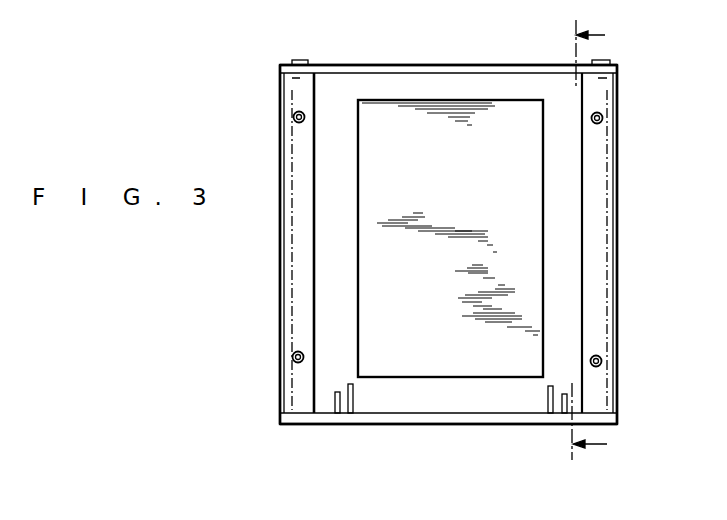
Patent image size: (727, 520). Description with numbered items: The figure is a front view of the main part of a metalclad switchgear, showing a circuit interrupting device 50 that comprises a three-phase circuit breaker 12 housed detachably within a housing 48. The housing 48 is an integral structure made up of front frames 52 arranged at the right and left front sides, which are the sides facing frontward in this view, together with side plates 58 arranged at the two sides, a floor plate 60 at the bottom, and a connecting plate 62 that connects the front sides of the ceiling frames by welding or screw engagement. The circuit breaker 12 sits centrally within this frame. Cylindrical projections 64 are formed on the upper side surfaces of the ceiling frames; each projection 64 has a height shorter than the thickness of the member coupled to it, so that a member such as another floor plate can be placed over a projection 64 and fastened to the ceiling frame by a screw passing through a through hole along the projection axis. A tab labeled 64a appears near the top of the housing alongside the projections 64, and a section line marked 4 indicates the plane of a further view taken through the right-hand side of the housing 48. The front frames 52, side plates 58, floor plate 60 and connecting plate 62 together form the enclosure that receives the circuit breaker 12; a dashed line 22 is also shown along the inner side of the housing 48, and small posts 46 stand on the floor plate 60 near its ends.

The section line of FIG. 4 is at (592, 239).
The three-phase circuit breaker 12 is at (358, 300).
The backing panel 22 is at (598, 293).
The support posts 46 is at (336, 413).
The housing 48 is at (573, 255).
The circuit interrupting device 50 is at (527, 62).
The front frames 52 is at (303, 245).
The side plates 58 is at (280, 327).
The floor plate 60 is at (437, 424).
The connecting plate 62 is at (432, 65).
The cylindrical projections 64 is at (612, 58).
The mounting tab 64a is at (306, 58).